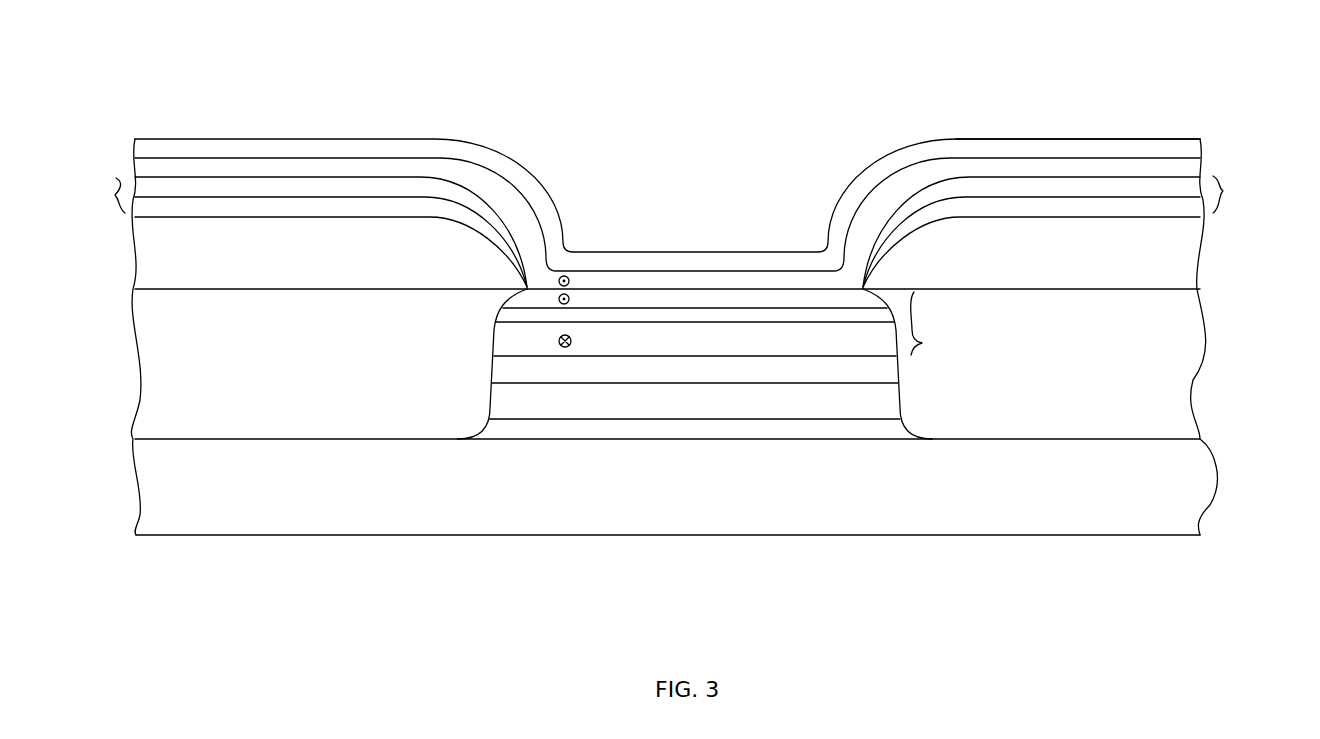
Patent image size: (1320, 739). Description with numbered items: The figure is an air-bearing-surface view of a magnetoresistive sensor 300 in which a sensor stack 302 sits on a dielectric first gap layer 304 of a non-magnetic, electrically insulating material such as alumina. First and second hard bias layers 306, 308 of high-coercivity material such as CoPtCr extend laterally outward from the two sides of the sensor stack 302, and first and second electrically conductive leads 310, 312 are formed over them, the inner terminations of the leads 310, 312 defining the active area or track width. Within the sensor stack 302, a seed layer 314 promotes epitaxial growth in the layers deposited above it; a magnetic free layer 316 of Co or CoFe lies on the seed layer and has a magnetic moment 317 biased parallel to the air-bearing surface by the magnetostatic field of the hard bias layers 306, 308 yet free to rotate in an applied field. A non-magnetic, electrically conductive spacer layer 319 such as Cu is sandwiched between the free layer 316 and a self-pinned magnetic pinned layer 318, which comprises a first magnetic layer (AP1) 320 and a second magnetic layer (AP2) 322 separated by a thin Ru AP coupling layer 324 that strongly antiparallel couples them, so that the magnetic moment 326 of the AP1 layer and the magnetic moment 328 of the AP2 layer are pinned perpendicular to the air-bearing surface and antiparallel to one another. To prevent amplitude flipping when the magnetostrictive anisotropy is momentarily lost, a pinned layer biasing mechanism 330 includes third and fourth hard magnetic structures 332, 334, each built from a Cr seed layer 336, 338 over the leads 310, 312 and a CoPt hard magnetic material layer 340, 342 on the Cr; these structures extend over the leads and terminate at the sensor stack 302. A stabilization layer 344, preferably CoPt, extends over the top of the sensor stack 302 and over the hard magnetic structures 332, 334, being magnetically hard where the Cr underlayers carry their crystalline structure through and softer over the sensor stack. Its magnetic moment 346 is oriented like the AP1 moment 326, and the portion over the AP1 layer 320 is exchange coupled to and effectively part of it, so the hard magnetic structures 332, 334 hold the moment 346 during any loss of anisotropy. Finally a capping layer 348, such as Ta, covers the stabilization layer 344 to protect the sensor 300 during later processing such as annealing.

The magnetoresistive sensor 300 is at (930, 78).
The sensor stack 302 is at (476, 396).
The dielectric first gap layer 304 is at (630, 488).
The first hard bias layer 306 is at (1008, 372).
The second hard bias layer 308 is at (192, 368).
The first electrically conductive lead 310 is at (982, 252).
The second electrically conductive lead 312 is at (198, 253).
The seed layer 314 is at (528, 429).
The magnetic free layer 316 is at (690, 405).
The magnetic moment of free layer 317 is at (549, 402).
The magnetic pinned layer 318 is at (922, 343).
The spacer layer 319 is at (690, 371).
The first magnetic layer (AP1) 320 is at (828, 297).
The second magnetic layer (AP2) 322 is at (690, 338).
The AP coupling layer 324 is at (770, 315).
The magnetic moment of AP1 layer 326 is at (558, 299).
The magnetic moment of AP2 layer 328 is at (572, 341).
The pinned layer biasing mechanism 330 is at (1110, 131).
The third hard magnetic structure 332 is at (1223, 191).
The fourth hard magnetic structure 334 is at (116, 178).
The Cr seed layer 336 is at (1055, 203).
The Cr seed layer 338 is at (368, 203).
The hard magnetic material layer 340 is at (1103, 185).
The hard magnetic material layer 342 is at (273, 185).
The stabilization layer 344 is at (300, 168).
The magnetic moment of stabilization layer 346 is at (569, 281).
The capping layer 348 is at (190, 149).